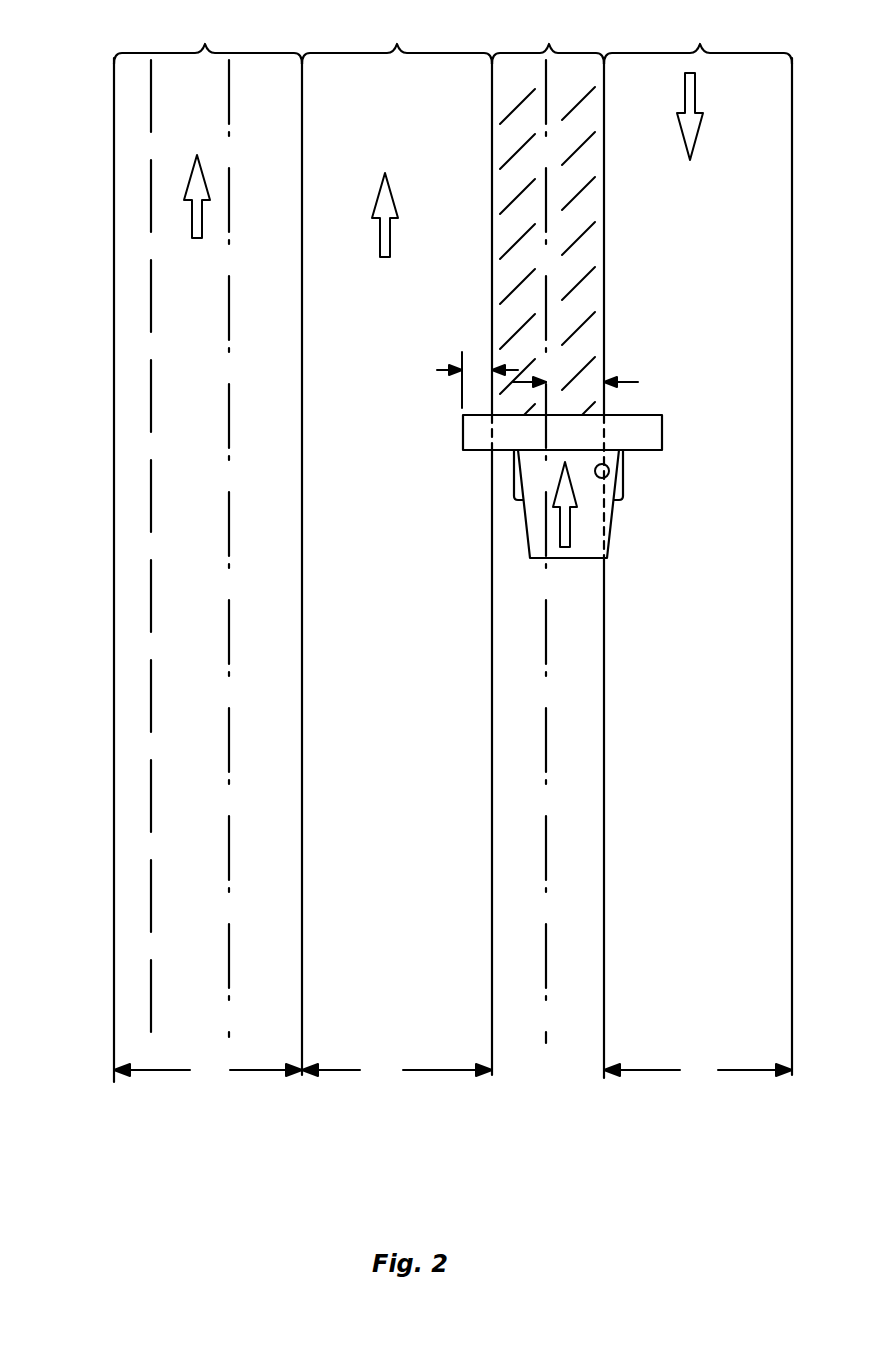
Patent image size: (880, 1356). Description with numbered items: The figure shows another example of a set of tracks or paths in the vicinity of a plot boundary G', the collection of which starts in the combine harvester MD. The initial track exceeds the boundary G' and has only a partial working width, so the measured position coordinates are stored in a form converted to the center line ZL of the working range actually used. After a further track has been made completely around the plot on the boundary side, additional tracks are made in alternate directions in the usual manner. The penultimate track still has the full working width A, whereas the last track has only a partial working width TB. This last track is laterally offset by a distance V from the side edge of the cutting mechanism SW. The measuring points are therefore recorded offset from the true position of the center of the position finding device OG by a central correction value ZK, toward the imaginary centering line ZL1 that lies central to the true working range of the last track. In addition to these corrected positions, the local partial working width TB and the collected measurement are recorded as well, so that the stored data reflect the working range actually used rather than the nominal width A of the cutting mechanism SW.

The plot boundary G' is at (95, 551).
The center line ZL is at (229, 315).
The center line ZL1 is at (546, 190).
The lateral offset distance V is at (476, 358).
The central correction value ZK is at (586, 362).
The cutting mechanism SW is at (638, 436).
The position finding device OG is at (609, 471).
The combine harvester MD is at (587, 532).
The full working width A is at (453, 1072).
The partial working width TB is at (533, 1072).